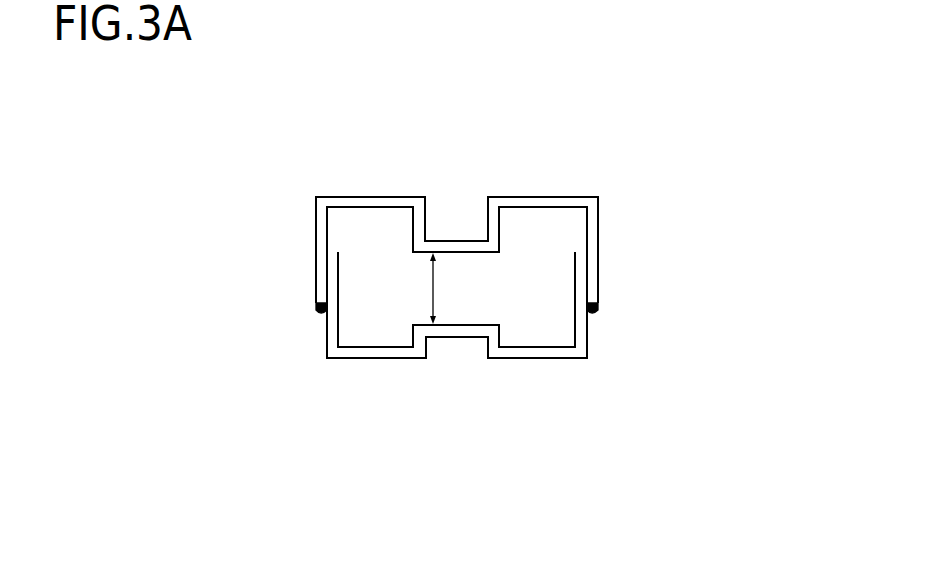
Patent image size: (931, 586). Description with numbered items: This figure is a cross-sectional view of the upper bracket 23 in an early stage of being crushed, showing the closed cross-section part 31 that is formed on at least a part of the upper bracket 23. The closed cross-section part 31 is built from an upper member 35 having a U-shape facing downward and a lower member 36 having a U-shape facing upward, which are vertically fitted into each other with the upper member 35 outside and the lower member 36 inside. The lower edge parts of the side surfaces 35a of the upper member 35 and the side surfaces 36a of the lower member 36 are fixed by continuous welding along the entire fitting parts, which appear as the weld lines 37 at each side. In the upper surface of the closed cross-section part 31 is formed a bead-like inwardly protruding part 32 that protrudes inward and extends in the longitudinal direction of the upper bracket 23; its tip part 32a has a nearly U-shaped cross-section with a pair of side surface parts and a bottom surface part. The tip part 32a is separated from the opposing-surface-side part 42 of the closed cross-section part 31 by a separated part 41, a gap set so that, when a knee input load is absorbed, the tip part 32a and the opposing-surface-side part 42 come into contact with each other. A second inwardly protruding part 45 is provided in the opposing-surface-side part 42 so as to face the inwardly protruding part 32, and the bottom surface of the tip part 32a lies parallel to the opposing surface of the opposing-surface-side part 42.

The upper bracket 23 is at (632, 180).
The closed cross-section part 31 is at (495, 263).
The inwardly protruding part 32 is at (444, 226).
The tip part 32a is at (462, 253).
The upper member 35 is at (570, 190).
The side surfaces of upper member 35a is at (316, 227).
The lower member 36 is at (581, 375).
The side surfaces of lower member 36a is at (327, 342).
The weld lines 37 is at (317, 312).
The separated part 41 is at (430, 288).
The opposing-surface-side part 42 is at (478, 325).
The second inwardly protruding part 45 is at (463, 344).